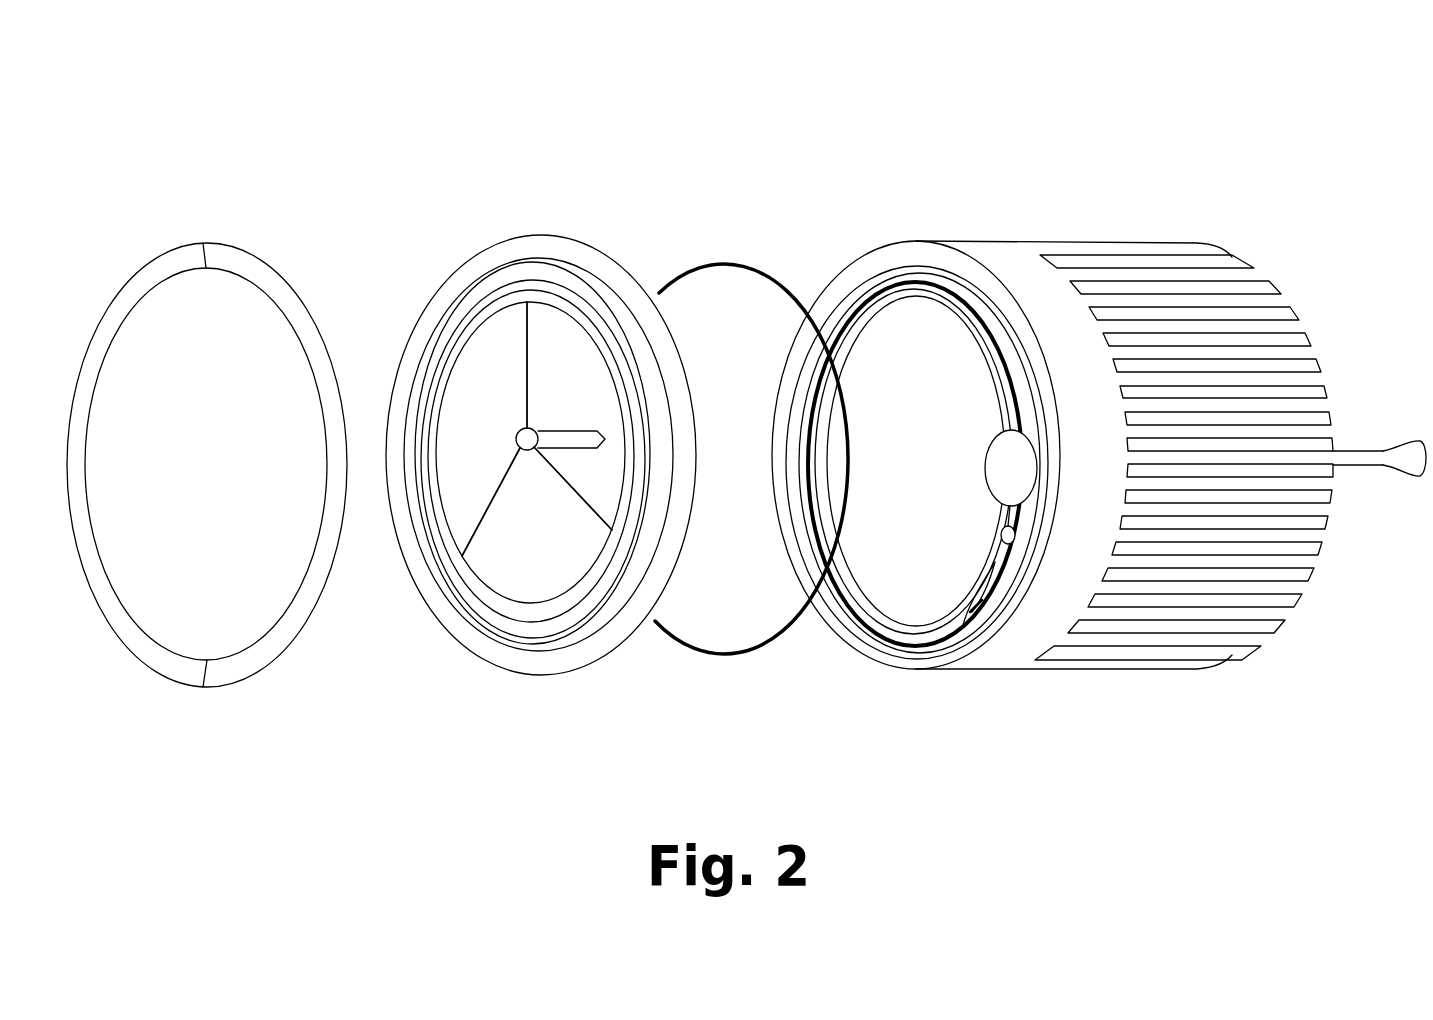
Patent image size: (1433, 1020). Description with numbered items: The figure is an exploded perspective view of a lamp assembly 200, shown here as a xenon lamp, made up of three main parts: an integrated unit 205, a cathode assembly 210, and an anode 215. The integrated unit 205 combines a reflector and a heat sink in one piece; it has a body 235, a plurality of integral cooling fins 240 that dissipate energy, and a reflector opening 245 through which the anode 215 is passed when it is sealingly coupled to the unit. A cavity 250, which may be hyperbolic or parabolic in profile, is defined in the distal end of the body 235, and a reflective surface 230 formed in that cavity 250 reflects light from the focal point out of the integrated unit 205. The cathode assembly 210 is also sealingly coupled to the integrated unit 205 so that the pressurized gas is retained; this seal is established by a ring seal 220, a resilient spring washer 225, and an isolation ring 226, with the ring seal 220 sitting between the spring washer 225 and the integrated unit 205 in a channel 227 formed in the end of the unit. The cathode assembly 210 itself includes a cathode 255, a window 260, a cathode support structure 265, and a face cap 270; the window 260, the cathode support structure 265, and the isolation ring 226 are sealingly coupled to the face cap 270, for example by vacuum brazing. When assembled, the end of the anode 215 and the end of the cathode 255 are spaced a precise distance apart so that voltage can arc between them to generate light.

The lamp assembly 200 is at (387, 112).
The integrated unit 205 is at (1038, 705).
The cathode assembly 210 is at (512, 695).
The anode 215 is at (1402, 440).
The ring seal 220 is at (725, 258).
The spring washer 225 is at (182, 240).
The isolation ring 226 is at (398, 482).
The channel 227 is at (862, 624).
The reflective surface 230 is at (965, 610).
The body 235 is at (1005, 243).
The cooling fins 240 is at (1213, 243).
The reflector opening 245 is at (1010, 468).
The cavity 250 is at (912, 362).
The cathode 255 is at (560, 423).
The window 260 is at (475, 365).
The cathode support structure 265 is at (586, 503).
The face cap 270 is at (477, 592).